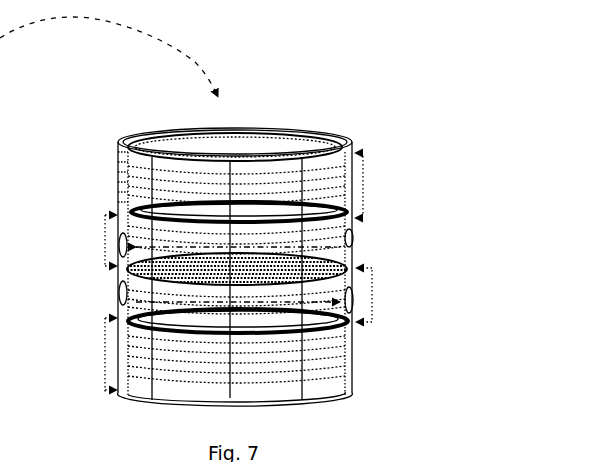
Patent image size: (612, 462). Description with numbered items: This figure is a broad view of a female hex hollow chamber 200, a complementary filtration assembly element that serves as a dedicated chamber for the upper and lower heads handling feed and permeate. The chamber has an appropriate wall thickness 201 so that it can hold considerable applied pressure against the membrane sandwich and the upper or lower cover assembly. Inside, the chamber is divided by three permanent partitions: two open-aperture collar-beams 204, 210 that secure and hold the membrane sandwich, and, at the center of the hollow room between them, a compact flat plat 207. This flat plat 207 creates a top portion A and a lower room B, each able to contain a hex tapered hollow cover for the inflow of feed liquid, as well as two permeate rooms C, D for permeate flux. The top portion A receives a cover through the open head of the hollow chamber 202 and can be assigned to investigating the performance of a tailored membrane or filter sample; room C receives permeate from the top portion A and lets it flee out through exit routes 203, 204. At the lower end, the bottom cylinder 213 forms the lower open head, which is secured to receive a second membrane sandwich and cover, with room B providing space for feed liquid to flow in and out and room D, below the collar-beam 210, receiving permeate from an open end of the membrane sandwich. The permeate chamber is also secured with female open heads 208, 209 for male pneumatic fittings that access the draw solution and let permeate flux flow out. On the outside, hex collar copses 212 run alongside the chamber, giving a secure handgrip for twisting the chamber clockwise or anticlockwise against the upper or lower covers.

The female hex hollow chamber 200 is at (290, 97).
The wall thickness 201 is at (144, 146).
The open head of the hollow chamber 202 is at (288, 150).
The exit route 203 is at (140, 195).
The open-aperture collar-beam 204 is at (356, 215).
The compact flat plat 207 is at (356, 268).
The female open head 208 is at (119, 292).
The female open head 209 is at (352, 303).
The open-aperture collar-beam 210 is at (352, 348).
The hex collar copses 212 is at (310, 397).
The bottom cylinder 213 is at (200, 393).
The top portion room A is at (364, 172).
The lower room B is at (102, 338).
The upper permeate room C is at (103, 240).
The lower permeate room D is at (373, 295).